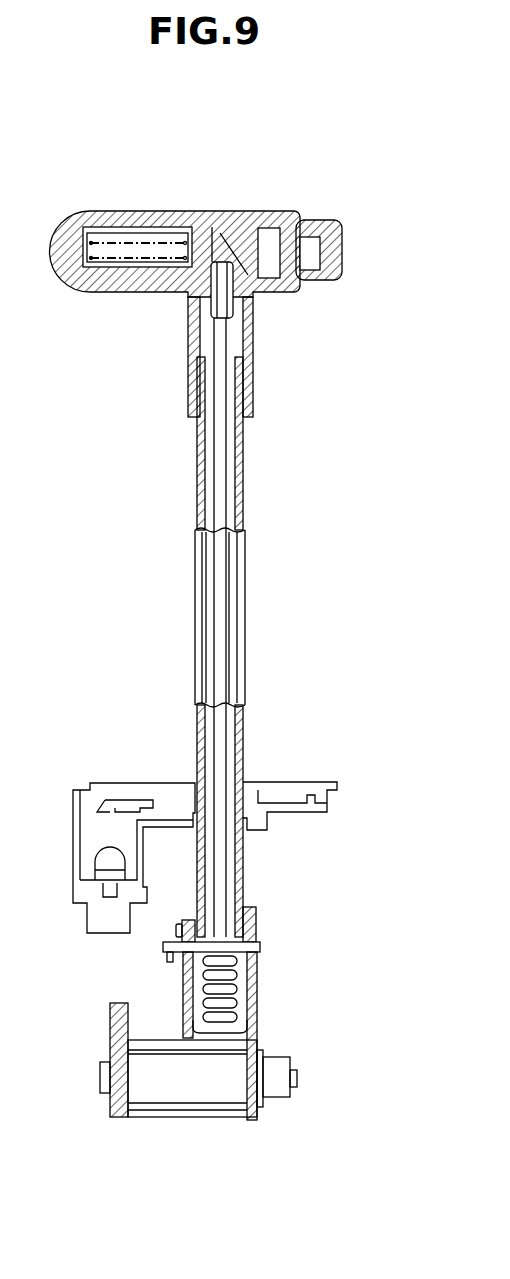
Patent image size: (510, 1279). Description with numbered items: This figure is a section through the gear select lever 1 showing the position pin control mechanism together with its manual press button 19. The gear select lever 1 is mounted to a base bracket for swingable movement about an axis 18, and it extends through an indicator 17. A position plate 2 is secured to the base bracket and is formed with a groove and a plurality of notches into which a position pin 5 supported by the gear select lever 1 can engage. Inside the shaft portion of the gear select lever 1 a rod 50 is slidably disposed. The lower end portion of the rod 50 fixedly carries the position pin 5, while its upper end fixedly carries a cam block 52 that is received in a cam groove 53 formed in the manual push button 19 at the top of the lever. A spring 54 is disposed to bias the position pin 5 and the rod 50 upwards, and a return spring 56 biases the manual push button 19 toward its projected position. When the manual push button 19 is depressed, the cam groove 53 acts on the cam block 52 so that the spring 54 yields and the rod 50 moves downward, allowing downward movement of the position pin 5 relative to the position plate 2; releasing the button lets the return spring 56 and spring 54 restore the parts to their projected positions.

The gear select lever 1 is at (230, 592).
The position plate 2 is at (255, 1005).
The position pin 5 is at (257, 927).
The indicator 17 is at (290, 785).
The axis 18 is at (298, 1080).
The manual press button 19 is at (337, 253).
The rod 50 is at (220, 468).
The cam block 52 is at (187, 295).
The cam groove 53 is at (257, 293).
The spring 54 is at (250, 967).
The return spring 56 is at (112, 230).